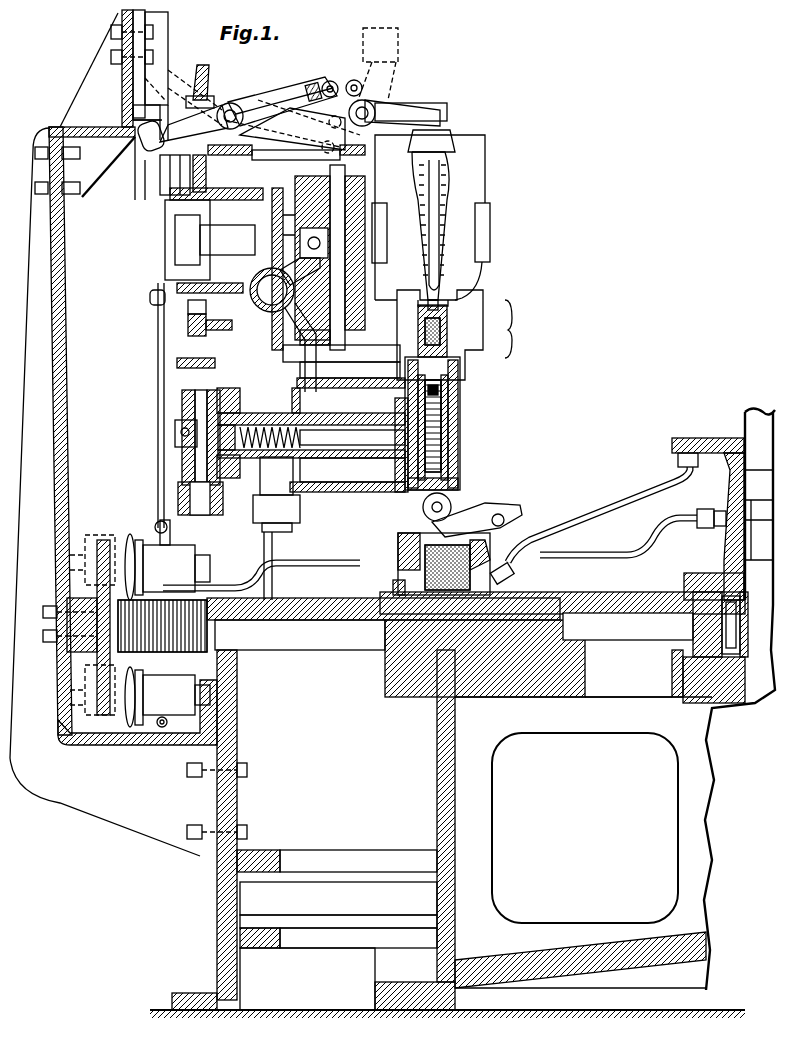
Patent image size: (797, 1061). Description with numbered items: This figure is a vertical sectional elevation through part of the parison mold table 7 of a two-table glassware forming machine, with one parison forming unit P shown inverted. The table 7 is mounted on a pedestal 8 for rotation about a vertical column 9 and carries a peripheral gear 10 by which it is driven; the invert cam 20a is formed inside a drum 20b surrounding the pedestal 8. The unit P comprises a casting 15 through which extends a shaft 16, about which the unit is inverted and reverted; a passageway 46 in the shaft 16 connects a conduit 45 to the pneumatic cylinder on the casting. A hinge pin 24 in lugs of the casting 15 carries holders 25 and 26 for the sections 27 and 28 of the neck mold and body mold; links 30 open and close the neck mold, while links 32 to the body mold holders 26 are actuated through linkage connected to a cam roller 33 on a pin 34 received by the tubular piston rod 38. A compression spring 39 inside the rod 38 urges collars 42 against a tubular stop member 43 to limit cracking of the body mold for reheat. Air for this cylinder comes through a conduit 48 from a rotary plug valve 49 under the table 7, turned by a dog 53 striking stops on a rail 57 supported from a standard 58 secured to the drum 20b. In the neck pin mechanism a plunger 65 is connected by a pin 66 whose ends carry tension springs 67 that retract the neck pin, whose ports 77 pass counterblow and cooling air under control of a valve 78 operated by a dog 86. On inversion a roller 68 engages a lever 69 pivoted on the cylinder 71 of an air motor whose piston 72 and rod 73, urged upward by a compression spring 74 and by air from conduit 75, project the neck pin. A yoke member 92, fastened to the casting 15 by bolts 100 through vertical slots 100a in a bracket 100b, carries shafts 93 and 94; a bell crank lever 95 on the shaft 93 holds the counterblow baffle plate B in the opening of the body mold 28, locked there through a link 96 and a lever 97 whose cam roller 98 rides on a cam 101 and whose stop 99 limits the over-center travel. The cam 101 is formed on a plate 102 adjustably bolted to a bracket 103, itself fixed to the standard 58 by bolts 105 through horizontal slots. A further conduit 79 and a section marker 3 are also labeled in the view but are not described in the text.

The section line 3 is at (166, 10).
The parison mold table 7 is at (542, 600).
The pedestal 8 is at (558, 738).
The vertical column 9 is at (750, 420).
The gear 10 is at (207, 640).
The casting 15 is at (288, 192).
The shaft 16 is at (245, 282).
The cam 20a is at (335, 895).
The drum 20b is at (232, 945).
The hinge pin 24 is at (343, 190).
The holders 25 is at (480, 345).
The holders 26 is at (492, 232).
The neck mold sections 27 is at (457, 343).
The body mold sections 28 is at (485, 155).
The links 30 is at (225, 320).
The links 32 is at (262, 200).
The cam roller 33 is at (300, 507).
The pin 34 is at (195, 432).
The tubular piston rod 38 is at (349, 445).
The compression spring 39 is at (268, 412).
The collars 42 is at (311, 414).
The tubular stop member 43 is at (311, 426).
The conduit 45 is at (300, 350).
The passageway 46 is at (152, 308).
The conduit 48 is at (162, 730).
The valve 49 is at (172, 700).
The dog 53 is at (130, 722).
The rail 57 is at (68, 655).
The standard 58 is at (45, 792).
The plunger 65 is at (440, 475).
The pin 66 is at (436, 393).
The tension spring 67 is at (458, 425).
The roller 68 is at (450, 505).
The lever 69 is at (492, 508).
The cylinder 71 is at (403, 535).
The piston 72 is at (400, 585).
The rod 73 is at (432, 535).
The compression spring 74 is at (398, 545).
The conduit 75 is at (578, 528).
The ports 77 is at (447, 322).
The rotary plug valve 78 is at (185, 555).
The pipe 79 is at (612, 553).
The dog 86 is at (128, 542).
The yoke member 92 is at (287, 148).
The shaft 93 is at (380, 105).
The shaft 94 is at (230, 103).
The bell crank lever 95 is at (410, 120).
The link 96 is at (354, 80).
The lever 97 is at (278, 95).
The cam roller 98 is at (150, 150).
The stop 99 is at (328, 82).
The bolts 100 is at (245, 108).
The vertical slots 100a is at (215, 128).
The bracket 100b is at (185, 168).
The cam 101 is at (166, 75).
The plate 102 is at (111, 30).
The bracket 103 is at (118, 88).
The bolts 105 is at (92, 198).
The counterblow baffle plate B is at (400, 40).
The parison forming unit P is at (516, 329).